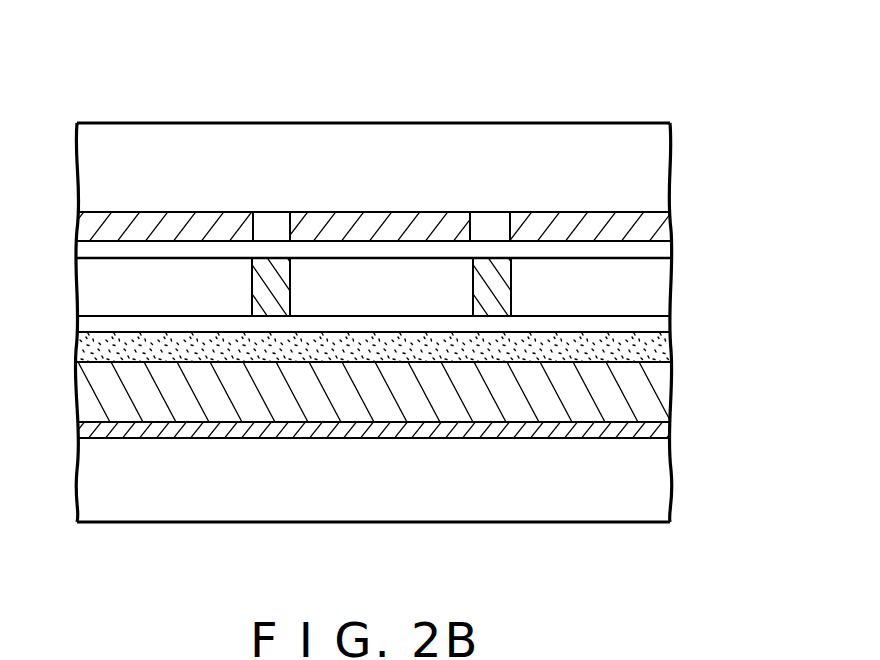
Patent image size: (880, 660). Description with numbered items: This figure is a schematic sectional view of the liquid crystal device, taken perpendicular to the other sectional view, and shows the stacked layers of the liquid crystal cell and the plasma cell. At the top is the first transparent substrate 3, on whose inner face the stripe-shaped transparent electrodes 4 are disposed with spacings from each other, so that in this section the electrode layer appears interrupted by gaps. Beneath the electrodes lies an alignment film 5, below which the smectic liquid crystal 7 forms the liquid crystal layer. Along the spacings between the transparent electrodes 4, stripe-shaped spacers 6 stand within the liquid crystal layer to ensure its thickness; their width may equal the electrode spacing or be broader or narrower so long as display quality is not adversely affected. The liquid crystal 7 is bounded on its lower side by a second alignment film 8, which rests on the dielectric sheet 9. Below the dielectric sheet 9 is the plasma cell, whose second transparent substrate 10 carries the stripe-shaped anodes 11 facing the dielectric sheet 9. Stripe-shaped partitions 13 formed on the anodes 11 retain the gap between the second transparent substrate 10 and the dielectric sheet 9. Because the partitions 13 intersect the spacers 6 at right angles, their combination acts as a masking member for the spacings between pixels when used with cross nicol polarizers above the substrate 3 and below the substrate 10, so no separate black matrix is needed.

The first transparent substrate 3 is at (652, 158).
The transparent electrodes 4 is at (200, 223).
The alignment film 5 is at (660, 247).
The spacers 6 is at (252, 290).
The smectic liquid crystal 7 is at (650, 293).
The alignment film 8 is at (660, 321).
The dielectric sheet 9 is at (660, 345).
The second transparent substrate 10 is at (650, 497).
The anodes 11 is at (660, 426).
The partitions 13 is at (652, 393).